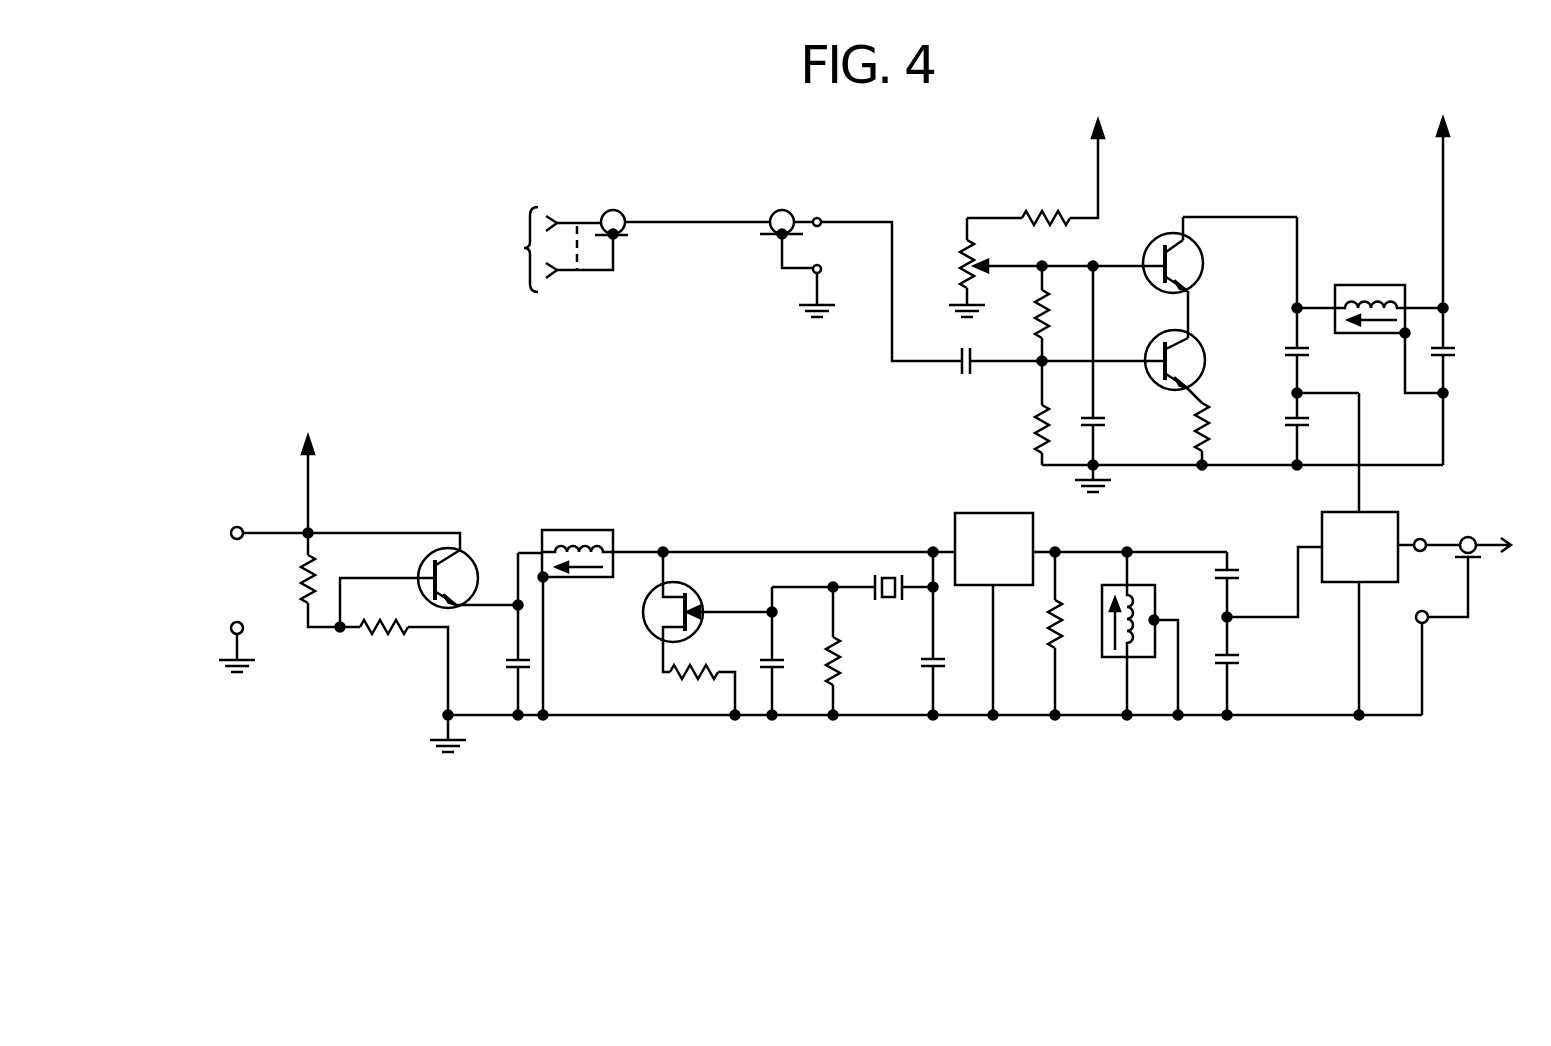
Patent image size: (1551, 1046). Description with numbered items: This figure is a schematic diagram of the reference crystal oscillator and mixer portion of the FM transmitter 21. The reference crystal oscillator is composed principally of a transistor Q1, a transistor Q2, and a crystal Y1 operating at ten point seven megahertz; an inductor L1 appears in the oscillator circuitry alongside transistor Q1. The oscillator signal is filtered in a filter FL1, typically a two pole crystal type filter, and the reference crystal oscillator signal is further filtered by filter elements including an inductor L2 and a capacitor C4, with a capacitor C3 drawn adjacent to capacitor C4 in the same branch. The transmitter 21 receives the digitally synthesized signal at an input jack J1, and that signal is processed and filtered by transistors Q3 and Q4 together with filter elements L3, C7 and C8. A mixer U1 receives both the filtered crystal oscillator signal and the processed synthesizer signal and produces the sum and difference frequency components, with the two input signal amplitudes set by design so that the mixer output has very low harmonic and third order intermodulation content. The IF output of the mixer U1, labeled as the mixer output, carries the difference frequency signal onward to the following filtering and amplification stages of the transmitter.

The FM transmitter 21 is at (947, 138).
The input jack J1 is at (555, 198).
The transistor Q1 is at (472, 552).
The inductor L1 is at (582, 528).
The transistor Q2 is at (697, 592).
The crystal Y1 is at (878, 608).
The filter FL1 is at (994, 614).
The filter element L2 is at (1110, 658).
The filter element C4 is at (1232, 567).
The capacitor C3 is at (1238, 665).
The mixer U1 is at (1360, 554).
The transistor Q3 is at (1203, 250).
The transistor Q4 is at (1165, 392).
The filter element C7 is at (1293, 345).
The filter element C8 is at (1293, 415).
The filter element L3 is at (1372, 285).